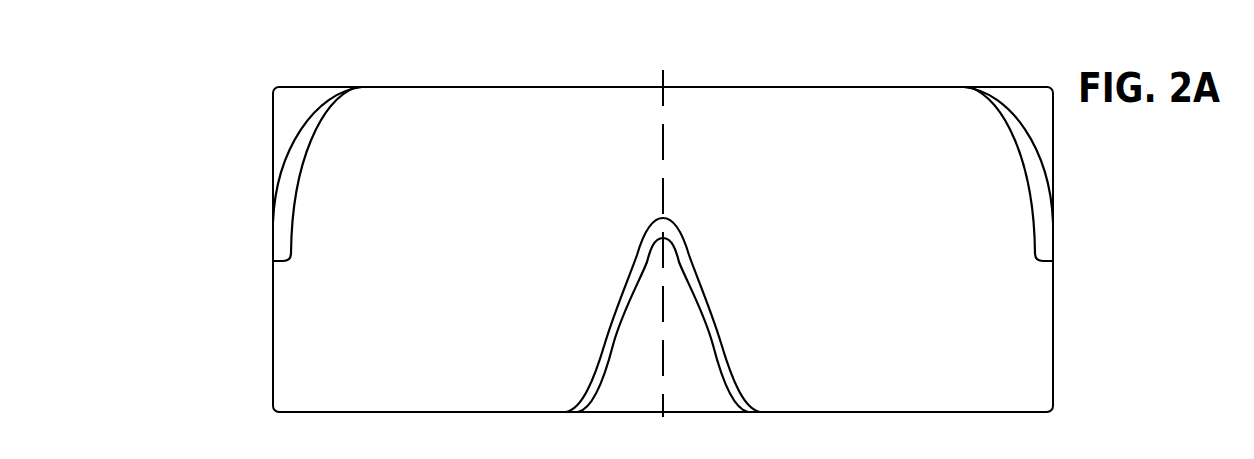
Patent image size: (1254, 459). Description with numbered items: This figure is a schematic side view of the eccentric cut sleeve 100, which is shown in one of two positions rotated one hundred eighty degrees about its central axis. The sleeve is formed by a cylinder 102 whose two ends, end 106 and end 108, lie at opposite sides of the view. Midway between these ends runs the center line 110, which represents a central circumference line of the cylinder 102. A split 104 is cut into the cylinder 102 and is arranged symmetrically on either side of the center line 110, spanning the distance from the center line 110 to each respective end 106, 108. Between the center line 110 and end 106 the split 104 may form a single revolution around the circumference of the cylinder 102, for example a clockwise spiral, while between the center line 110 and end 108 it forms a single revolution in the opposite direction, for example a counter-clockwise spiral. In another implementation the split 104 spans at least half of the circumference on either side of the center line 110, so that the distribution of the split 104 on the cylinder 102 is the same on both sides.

The eccentric cut sleeve 100 is at (172, 173).
The cylinder 102 is at (290, 308).
The split 104 is at (688, 287).
The end 106 is at (273, 366).
The end 108 is at (1054, 363).
The center line 110 is at (664, 259).